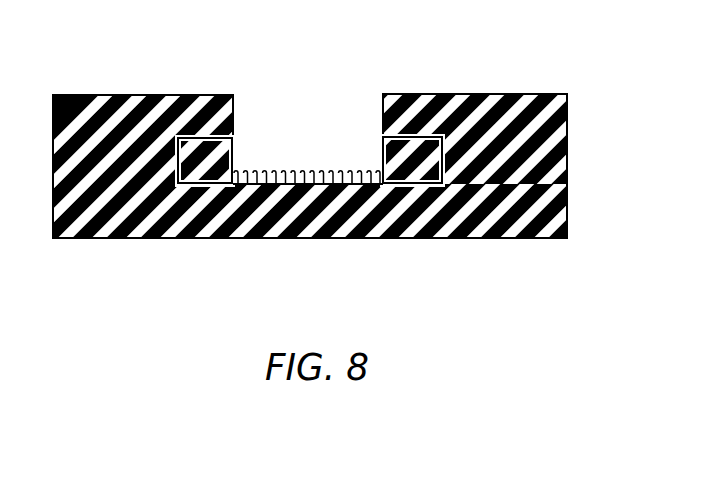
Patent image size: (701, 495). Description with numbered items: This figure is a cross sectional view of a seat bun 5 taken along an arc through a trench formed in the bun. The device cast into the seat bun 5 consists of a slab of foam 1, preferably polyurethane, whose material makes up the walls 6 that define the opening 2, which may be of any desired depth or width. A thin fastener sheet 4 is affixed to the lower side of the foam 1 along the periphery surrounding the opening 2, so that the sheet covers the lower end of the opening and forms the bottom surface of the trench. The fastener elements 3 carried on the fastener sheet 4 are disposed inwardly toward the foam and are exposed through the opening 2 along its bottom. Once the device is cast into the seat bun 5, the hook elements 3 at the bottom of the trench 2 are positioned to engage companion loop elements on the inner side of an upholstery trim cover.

The foam 1 is at (383, 143).
The opening 2 is at (253, 156).
The fastener elements 3 is at (310, 168).
The fastener sheet 4 is at (308, 186).
The seat bun 5 is at (497, 93).
The walls 6 is at (381, 166).